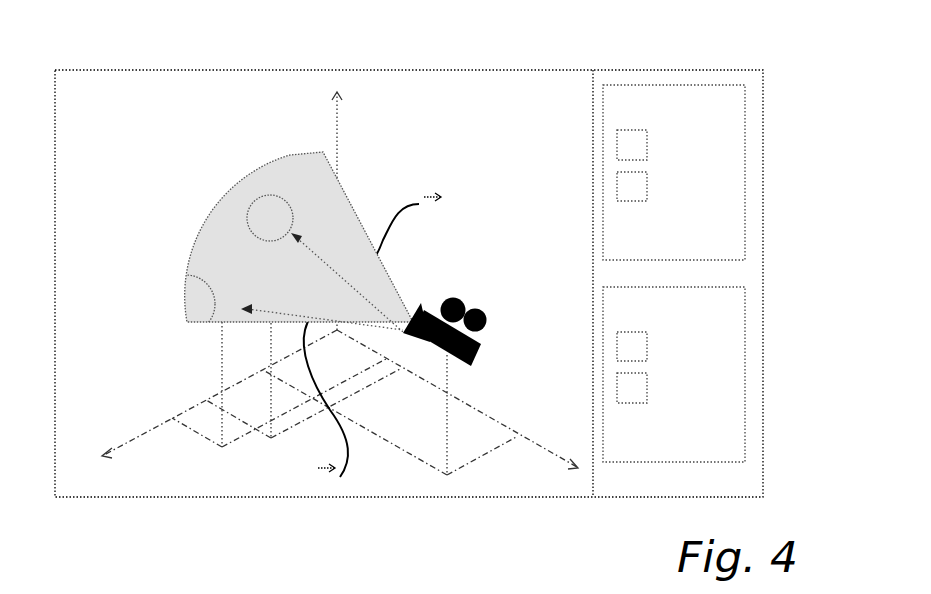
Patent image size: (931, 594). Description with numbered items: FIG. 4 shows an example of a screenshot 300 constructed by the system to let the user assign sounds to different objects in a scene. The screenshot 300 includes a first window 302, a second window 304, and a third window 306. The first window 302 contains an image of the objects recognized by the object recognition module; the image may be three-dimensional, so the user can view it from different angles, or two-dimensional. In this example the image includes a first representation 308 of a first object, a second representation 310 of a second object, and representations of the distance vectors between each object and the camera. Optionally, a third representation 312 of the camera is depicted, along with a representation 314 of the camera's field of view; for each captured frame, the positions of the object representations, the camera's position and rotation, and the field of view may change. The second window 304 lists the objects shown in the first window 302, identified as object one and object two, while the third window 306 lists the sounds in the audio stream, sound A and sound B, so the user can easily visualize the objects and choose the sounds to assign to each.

The screenshot 300 is at (131, 40).
The first window 302 is at (475, 148).
The second window 304 is at (727, 137).
The third window 306 is at (728, 387).
The first representation 308 is at (200, 284).
The second representation 310 is at (237, 198).
The third representation 312 is at (468, 366).
The representation of the camera's field of view 314 is at (343, 197).